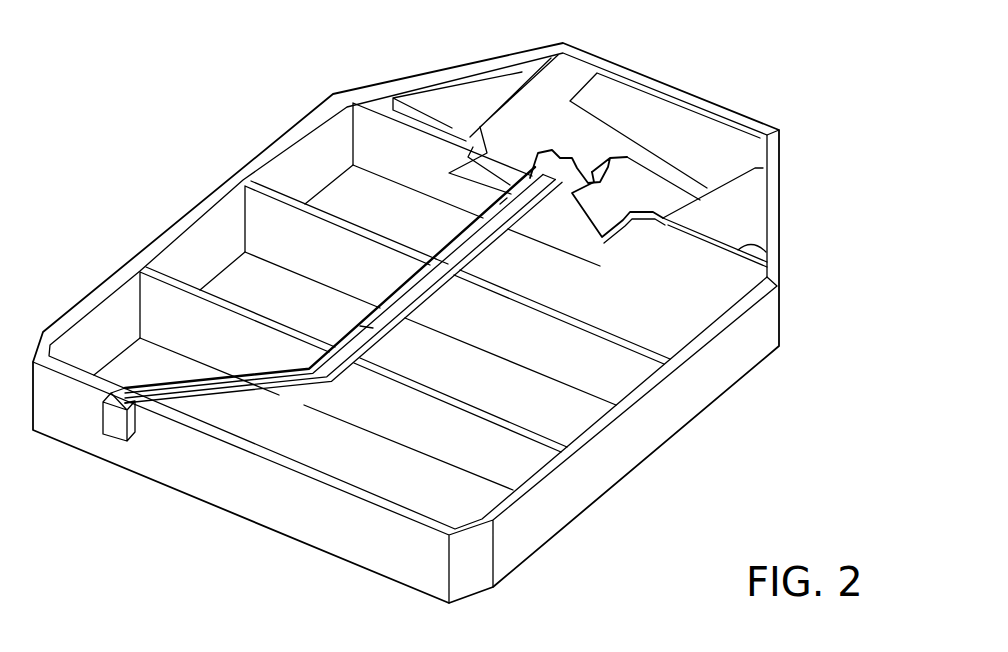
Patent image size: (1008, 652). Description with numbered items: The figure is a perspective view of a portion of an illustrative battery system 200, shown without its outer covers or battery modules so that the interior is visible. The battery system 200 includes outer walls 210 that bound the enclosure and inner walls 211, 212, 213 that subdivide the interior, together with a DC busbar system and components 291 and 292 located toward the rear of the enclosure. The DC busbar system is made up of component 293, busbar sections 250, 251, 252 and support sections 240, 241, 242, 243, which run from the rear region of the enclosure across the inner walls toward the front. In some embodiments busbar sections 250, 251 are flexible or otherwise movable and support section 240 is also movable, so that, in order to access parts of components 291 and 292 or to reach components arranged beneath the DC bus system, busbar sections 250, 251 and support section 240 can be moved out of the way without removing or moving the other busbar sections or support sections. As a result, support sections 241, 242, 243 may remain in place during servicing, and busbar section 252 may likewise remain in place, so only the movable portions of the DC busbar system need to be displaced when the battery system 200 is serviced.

The battery system 200 is at (189, 122).
The outer walls 210 is at (670, 420).
The inner wall 211 is at (416, 156).
The inner wall 212 is at (314, 242).
The inner wall 213 is at (220, 332).
The support section 240 is at (574, 195).
The support section 241 is at (515, 240).
The support section 242 is at (408, 326).
The support section 243 is at (278, 394).
The busbar section 250 is at (590, 168).
The busbar section 251 is at (507, 198).
The busbar section 252 is at (373, 328).
The component 291 is at (485, 110).
The component 292 is at (756, 232).
The component 293 is at (558, 132).